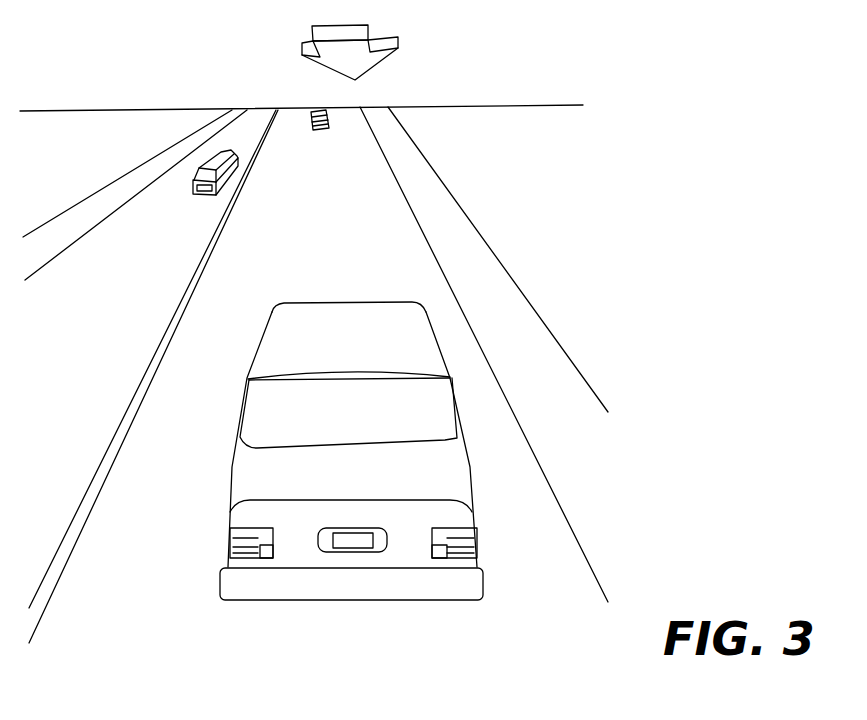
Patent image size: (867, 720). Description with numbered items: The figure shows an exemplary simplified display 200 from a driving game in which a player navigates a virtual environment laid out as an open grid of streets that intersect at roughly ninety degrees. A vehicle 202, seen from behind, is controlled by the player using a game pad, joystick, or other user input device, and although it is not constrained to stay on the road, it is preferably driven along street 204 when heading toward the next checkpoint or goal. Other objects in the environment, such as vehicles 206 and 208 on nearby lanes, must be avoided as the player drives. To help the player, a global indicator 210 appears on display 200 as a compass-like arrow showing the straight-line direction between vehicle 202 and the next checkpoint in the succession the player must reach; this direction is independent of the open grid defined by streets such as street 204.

The display 200 is at (132, 623).
The vehicle 202 is at (470, 470).
The street 204 is at (400, 222).
The vehicle 206 is at (202, 167).
The vehicle 208 is at (305, 108).
The global indicator 210 is at (382, 53).